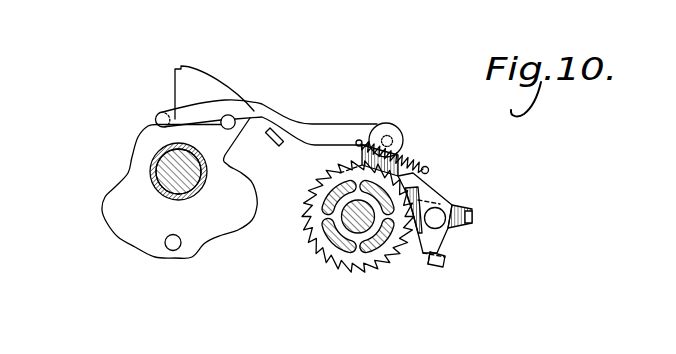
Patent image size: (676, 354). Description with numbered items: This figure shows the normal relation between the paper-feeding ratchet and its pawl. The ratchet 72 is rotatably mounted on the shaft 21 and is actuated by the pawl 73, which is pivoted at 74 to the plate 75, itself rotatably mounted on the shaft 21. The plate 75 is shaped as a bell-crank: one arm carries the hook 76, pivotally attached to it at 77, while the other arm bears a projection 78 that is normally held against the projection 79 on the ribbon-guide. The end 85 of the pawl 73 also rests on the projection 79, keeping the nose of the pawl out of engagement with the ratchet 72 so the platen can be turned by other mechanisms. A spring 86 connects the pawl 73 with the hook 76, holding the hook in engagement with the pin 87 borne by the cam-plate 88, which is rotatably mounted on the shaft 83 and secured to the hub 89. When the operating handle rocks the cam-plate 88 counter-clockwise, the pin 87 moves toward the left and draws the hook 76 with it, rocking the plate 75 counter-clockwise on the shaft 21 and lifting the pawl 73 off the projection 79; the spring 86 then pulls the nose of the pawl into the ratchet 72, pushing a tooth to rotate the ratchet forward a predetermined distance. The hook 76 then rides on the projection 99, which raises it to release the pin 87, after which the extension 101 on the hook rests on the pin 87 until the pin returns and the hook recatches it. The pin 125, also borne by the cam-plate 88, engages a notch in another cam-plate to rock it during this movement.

The shaft 21 is at (343, 220).
The ratchet 72 is at (323, 262).
The pawl 73 is at (430, 192).
The pivot 74 is at (435, 218).
The plate 75 is at (473, 214).
The hook 76 is at (277, 107).
The pivot 77 is at (394, 139).
The projection 78 is at (447, 243).
The projection 79 is at (441, 268).
The shaft 83 is at (153, 158).
The end of pawl 85 is at (422, 256).
The spring 86 is at (425, 168).
The pin 87 is at (223, 116).
The cam-plate 88 is at (179, 188).
The hub 89 is at (158, 191).
The projection 99 is at (281, 146).
The extension 101 is at (156, 118).
The pin 125 is at (175, 249).